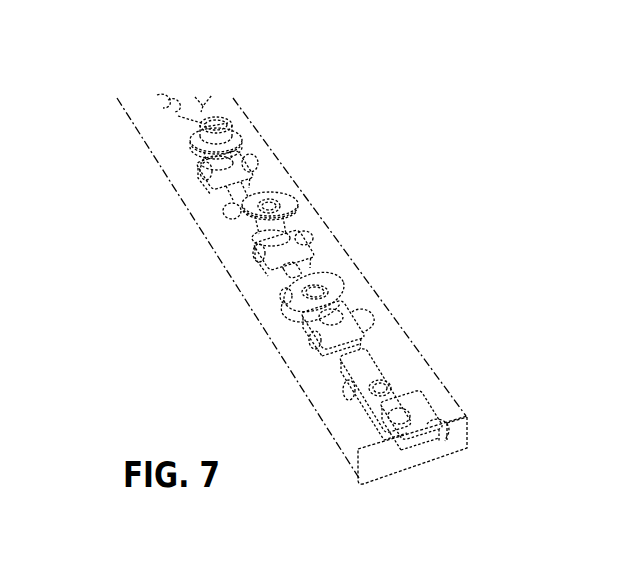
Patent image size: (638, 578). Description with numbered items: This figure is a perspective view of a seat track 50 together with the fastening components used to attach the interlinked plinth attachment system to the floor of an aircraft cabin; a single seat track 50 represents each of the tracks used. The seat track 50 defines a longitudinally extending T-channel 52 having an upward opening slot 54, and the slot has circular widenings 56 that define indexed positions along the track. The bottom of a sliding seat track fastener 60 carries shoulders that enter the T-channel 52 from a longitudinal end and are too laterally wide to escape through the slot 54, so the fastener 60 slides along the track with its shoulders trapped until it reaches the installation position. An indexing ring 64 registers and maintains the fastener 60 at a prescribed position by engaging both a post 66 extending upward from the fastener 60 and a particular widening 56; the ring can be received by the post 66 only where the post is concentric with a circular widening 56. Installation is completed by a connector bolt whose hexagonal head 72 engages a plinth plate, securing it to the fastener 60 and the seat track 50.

The seat track 50 is at (422, 206).
The T-channel 52 is at (420, 460).
The upward opening slot 54 is at (423, 401).
The circular widenings 56 is at (257, 253).
The sliding seat track fastener 60 is at (282, 250).
The indexing ring 64 is at (333, 288).
The post 66 is at (382, 387).
The head 72 is at (213, 123).